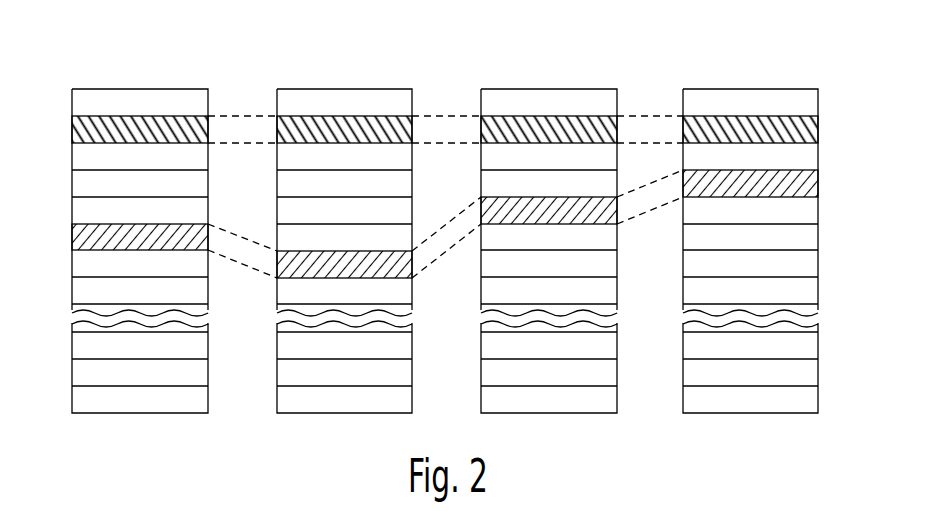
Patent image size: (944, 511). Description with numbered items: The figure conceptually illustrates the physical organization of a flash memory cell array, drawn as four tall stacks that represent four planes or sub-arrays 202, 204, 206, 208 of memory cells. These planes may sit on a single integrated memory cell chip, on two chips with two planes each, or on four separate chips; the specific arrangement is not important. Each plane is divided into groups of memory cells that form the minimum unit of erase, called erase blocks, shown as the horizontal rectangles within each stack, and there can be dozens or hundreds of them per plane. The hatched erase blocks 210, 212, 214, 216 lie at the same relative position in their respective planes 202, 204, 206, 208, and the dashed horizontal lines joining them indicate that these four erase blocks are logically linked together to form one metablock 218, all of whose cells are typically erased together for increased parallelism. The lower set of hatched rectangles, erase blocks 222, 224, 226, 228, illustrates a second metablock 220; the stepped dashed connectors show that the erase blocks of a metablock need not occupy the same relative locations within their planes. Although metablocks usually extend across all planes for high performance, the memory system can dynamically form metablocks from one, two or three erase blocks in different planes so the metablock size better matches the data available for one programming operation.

The plane 202 is at (144, 70).
The plane 204 is at (350, 70).
The plane 206 is at (541, 70).
The plane 208 is at (767, 69).
The erase block 210 is at (120, 130).
The erase block 212 is at (320, 130).
The erase block 214 is at (525, 130).
The erase block 216 is at (780, 128).
The metablock 218 is at (659, 114).
The second metablock 220 is at (647, 180).
The erase block 222 is at (115, 237).
The erase block 224 is at (316, 262).
The erase block 226 is at (533, 210).
The erase block 228 is at (780, 180).